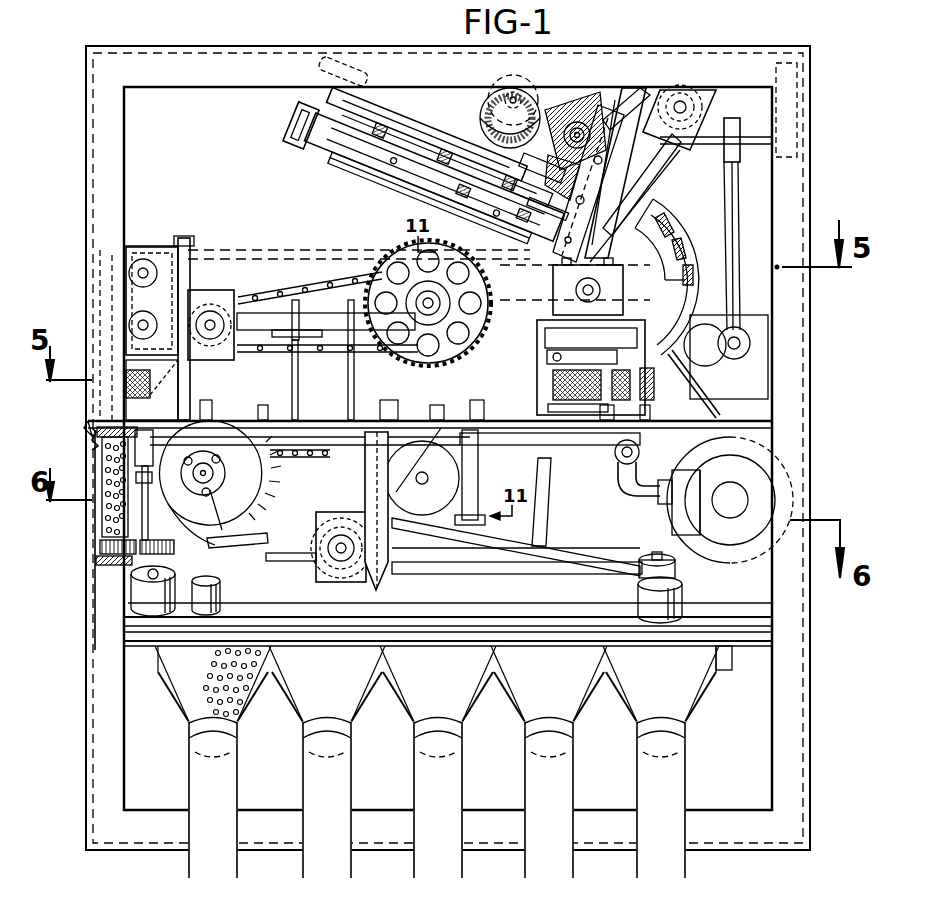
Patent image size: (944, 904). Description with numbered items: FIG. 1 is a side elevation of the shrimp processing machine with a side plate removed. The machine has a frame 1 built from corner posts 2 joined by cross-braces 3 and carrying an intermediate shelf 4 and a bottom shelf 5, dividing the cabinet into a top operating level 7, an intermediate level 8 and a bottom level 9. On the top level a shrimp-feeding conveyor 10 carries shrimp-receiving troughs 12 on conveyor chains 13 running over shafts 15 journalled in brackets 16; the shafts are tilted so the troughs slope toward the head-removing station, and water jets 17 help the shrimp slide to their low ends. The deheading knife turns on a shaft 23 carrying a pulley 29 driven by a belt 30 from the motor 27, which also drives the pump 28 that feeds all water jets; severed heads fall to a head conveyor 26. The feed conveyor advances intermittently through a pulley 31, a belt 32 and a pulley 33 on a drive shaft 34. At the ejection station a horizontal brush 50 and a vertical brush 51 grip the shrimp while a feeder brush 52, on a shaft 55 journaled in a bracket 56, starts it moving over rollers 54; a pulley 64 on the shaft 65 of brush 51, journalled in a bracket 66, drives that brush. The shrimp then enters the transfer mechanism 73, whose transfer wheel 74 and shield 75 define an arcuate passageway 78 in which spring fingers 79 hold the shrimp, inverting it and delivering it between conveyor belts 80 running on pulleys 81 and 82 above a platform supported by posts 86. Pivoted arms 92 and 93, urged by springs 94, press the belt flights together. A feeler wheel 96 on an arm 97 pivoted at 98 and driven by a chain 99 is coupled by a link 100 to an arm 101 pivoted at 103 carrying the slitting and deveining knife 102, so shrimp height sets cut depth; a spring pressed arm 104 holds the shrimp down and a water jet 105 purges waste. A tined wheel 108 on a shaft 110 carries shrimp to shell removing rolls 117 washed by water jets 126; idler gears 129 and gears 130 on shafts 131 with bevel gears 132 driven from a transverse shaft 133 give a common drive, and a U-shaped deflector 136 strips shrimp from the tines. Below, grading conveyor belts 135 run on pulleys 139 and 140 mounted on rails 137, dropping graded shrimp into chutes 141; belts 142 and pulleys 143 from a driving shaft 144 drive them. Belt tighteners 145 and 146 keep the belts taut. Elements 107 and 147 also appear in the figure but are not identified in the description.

The frame 1 is at (76, 110).
The corner posts 2 is at (90, 190).
The cross-braces 3 is at (88, 636).
The intermediate shelf 4 is at (772, 412).
The bottom shelf 5 is at (760, 600).
The top operating level 7 is at (142, 206).
The intermediate level 8 is at (758, 362).
The bottom level 9 is at (676, 444).
The shrimp-feeding conveyor 10 is at (302, 156).
The shrimp-receiving troughs 12 is at (382, 160).
The conveyor chains 13 is at (396, 106).
The shafts 15 is at (525, 205).
The brackets 16 is at (302, 108).
The water jets 17 is at (340, 66).
The shaft 23 is at (762, 136).
The head conveyor 26 is at (297, 252).
The motor 27 is at (752, 378).
The pump 28 is at (685, 522).
The pulley 29 is at (736, 156).
The belt 30 is at (740, 228).
The pulley 31 is at (611, 287).
The belt 32 is at (654, 186).
The pulley 33 is at (712, 96).
The drive shaft 34 is at (682, 104).
The horizontal brush 50 is at (585, 178).
The vertical brush 51 is at (577, 118).
The feeder brush 52 is at (498, 106).
The rollers 54 is at (560, 210).
The shaft 55 is at (505, 80).
The bracket 56 is at (540, 82).
The pulley 64 is at (612, 136).
The shaft 65 is at (592, 100).
The bracket 66 is at (640, 95).
The transfer mechanism 73 is at (690, 248).
The transfer wheel 74 is at (538, 283).
The shield 75 is at (745, 262).
The arcuate passageway 78 is at (706, 258).
The spring fingers 79 is at (692, 212).
The conveyor belts 80 is at (400, 382).
The pulleys 81 is at (648, 350).
The pulleys 82 is at (160, 382).
The posts 86 is at (250, 418).
The pivoted arms 92 is at (455, 490).
The arms 93 is at (184, 238).
The springs 94 is at (465, 455).
The wheel 96 is at (400, 252).
The arm 97 is at (325, 314).
The pivot 98 is at (208, 300).
The chain 99 is at (302, 290).
The link 100 is at (330, 448).
The arm 101 is at (572, 440).
The slitting and deveining knife 102 is at (376, 475).
The pivot 103 is at (616, 470).
The spring pressed arm 104 is at (522, 305).
The water jet 105 is at (330, 408).
The gear 107 is at (100, 548).
The tined wheel 108 is at (252, 470).
The shaft 110 is at (232, 462).
The shell removing rolls 117 is at (102, 460).
The water jets 126 is at (96, 440).
The idler gears 129 is at (110, 512).
The gears 130 is at (125, 570).
The shafts 131 is at (172, 502).
The bevel gears 132 is at (100, 328).
The transverse shaft 133 is at (108, 300).
The grading conveyor belts 135 is at (456, 620).
The U-shaped deflector 136 is at (270, 536).
The rails 137 is at (750, 640).
The pulleys 139 is at (160, 612).
The pulleys 140 is at (684, 590).
The shrimp receiving chutes 141 is at (190, 722).
The belts 142 is at (560, 556).
The pulleys 143 is at (644, 558).
The driving shaft 144 is at (346, 556).
The belt tightener 145 is at (648, 410).
The belt tightener 146 is at (222, 595).
The cam box 147 is at (296, 558).